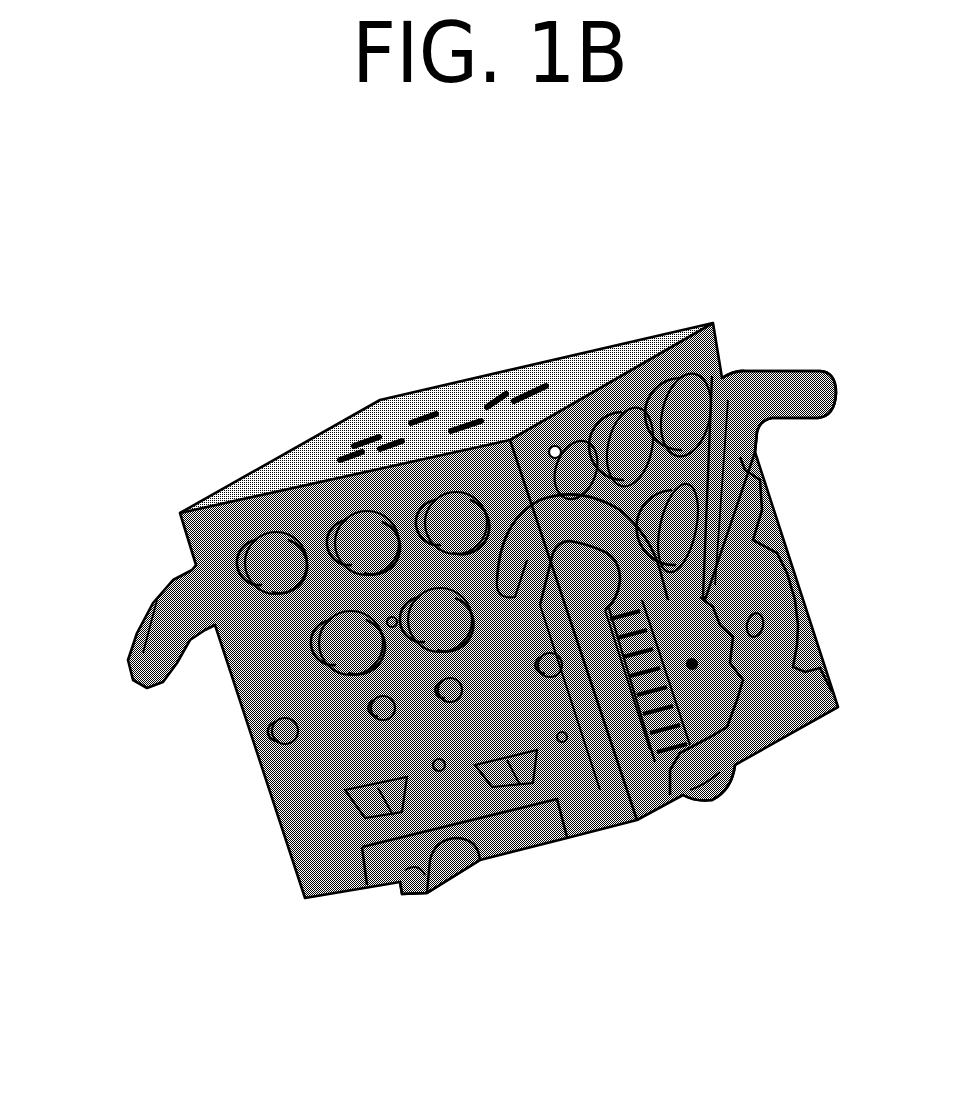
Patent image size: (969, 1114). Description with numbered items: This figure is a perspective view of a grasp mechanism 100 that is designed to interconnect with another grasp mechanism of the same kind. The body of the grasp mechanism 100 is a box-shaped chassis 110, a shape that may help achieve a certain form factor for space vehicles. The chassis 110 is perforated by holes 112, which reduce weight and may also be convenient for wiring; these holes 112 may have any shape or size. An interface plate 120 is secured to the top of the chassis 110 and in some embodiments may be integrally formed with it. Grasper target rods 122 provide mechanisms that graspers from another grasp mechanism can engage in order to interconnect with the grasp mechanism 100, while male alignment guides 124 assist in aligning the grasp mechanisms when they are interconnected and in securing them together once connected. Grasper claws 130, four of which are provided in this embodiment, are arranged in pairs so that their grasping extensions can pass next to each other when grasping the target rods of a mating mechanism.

The grasp mechanism 100 is at (147, 163).
The chassis 110 is at (292, 443).
The holes 112 is at (448, 405).
The interface plate 120 is at (515, 855).
The grasper target rods 122 is at (420, 895).
The male alignment guides 124 is at (720, 800).
The grasper claws 130 is at (783, 385).